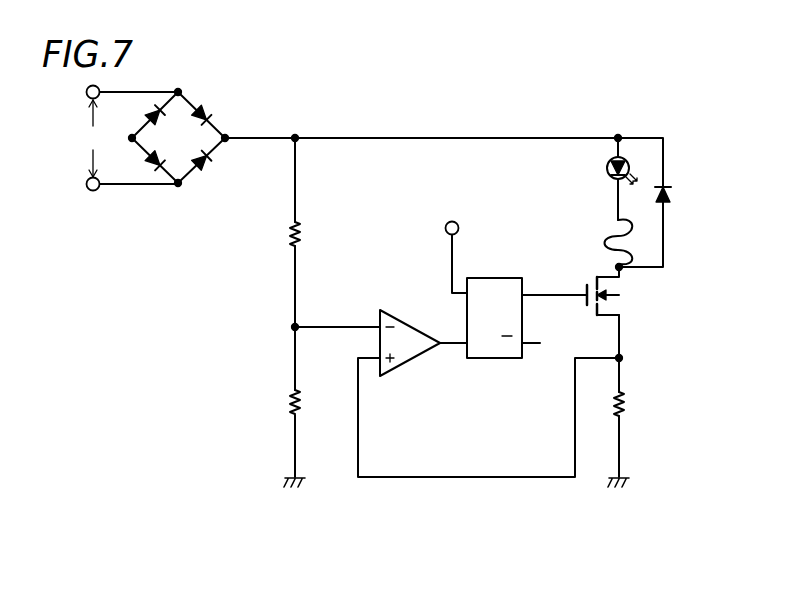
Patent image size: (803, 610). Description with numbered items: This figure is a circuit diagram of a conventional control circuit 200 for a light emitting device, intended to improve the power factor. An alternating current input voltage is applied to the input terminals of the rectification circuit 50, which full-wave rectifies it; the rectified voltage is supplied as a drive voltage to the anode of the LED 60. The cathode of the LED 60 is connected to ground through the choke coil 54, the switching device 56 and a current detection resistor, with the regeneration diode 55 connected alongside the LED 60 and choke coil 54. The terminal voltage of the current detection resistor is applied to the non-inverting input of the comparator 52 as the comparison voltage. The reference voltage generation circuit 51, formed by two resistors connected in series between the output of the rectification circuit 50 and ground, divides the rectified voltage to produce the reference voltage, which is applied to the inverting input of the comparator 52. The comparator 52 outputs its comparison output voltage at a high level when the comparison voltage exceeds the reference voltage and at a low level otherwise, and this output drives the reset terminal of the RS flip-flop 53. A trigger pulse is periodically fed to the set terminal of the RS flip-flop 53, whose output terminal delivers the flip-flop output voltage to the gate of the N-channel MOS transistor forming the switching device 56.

The control circuit 200 is at (489, 108).
The rectification circuit 50 is at (204, 93).
The reference voltage generation circuit 51 is at (331, 211).
The comparator 52 is at (405, 313).
The RS flip-flop 53 is at (502, 277).
The choke coil 54 is at (607, 236).
The regeneration diode 55 is at (676, 196).
The switching device 56 is at (629, 297).
The LED 60 is at (606, 168).